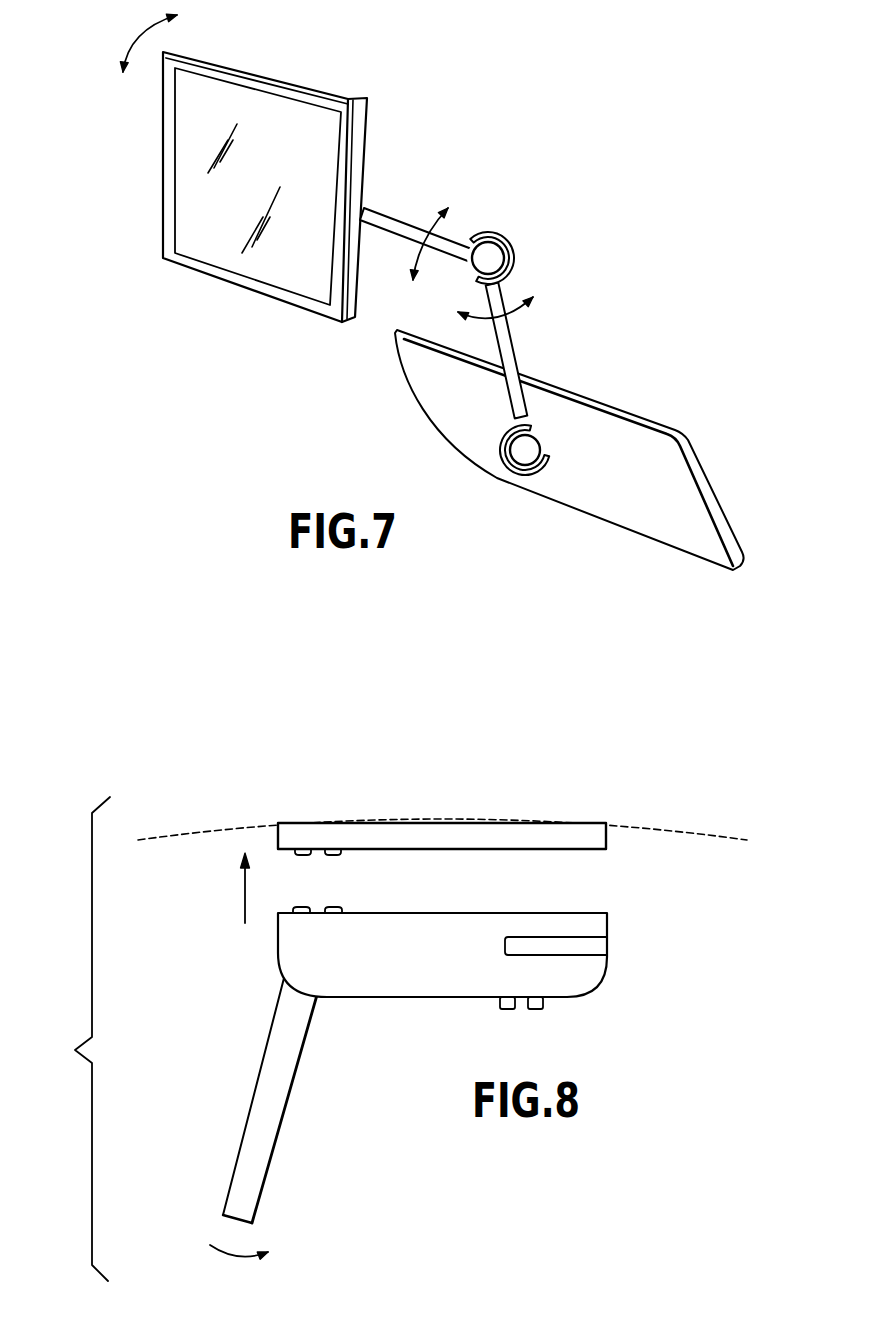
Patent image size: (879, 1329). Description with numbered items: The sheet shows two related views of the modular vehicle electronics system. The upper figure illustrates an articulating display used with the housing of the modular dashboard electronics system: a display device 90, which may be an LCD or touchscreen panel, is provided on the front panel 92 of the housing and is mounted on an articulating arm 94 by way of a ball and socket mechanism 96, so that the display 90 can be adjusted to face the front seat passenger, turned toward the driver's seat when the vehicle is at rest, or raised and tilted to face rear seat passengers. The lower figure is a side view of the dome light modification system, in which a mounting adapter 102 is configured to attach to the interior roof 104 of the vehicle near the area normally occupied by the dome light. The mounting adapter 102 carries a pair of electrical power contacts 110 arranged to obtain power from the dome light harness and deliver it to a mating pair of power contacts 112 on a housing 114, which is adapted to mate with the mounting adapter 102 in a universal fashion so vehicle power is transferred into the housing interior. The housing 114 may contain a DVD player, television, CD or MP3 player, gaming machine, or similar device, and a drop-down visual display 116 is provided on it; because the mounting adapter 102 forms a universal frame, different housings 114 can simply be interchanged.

In FIG. 7, the display device 90 is at (297, 107).
In FIG. 7, the front panel 92 is at (642, 437).
In FIG. 7, the articulating arm 94 is at (510, 347).
In FIG. 7, the ball and socket mechanism 96 is at (490, 250).
In FIG. 8, the mounting adapter 102 is at (480, 822).
In FIG. 8, the interior roof 104 is at (667, 827).
In FIG. 8, the electrical power contacts 110 is at (306, 848).
In FIG. 8, the power contacts 112 is at (303, 906).
In FIG. 8, the housing 114 is at (387, 999).
In FIG. 8, the drop-down visual display 116 is at (250, 1133).